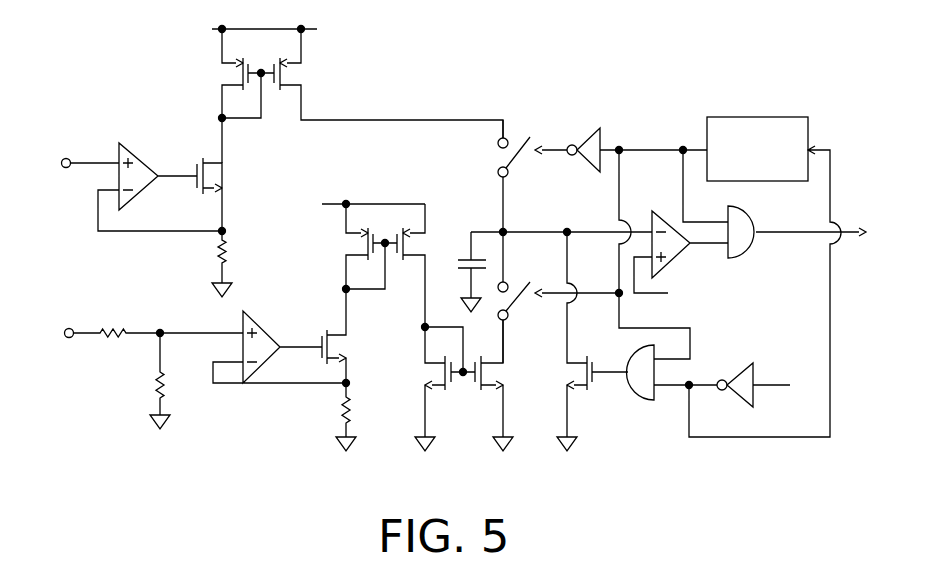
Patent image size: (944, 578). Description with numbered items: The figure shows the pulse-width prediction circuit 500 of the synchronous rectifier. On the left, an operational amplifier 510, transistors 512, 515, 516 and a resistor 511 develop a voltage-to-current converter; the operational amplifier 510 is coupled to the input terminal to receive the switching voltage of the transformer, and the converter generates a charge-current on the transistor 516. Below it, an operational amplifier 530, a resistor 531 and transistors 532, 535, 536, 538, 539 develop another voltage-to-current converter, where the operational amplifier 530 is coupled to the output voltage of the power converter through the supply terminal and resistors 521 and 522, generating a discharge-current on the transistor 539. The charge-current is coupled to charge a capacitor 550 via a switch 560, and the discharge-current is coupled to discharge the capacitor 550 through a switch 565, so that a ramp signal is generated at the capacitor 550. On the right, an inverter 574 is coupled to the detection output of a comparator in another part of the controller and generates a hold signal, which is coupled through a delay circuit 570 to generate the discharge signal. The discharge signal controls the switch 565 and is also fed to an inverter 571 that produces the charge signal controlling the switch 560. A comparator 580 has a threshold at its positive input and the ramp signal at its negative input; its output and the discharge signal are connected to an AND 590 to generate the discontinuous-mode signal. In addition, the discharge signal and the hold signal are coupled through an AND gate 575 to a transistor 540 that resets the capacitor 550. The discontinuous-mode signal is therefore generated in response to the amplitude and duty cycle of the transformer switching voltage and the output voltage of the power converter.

The pulse-width prediction circuit 500 is at (788, 68).
The operational amplifier 510 is at (140, 160).
The resistor 511 is at (241, 264).
The transistor 512 is at (232, 194).
The transistor 515 is at (222, 96).
The transistor 516 is at (382, 83).
The resistor 521 is at (134, 328).
The resistor 522 is at (150, 384).
The operational amplifier 530 is at (272, 337).
The resistor 531 is at (364, 417).
The transistor 532 is at (357, 336).
The transistor 535 is at (347, 248).
The transistor 536 is at (410, 265).
The transistor 538 is at (445, 389).
The transistor 539 is at (511, 385).
The transistor 540 is at (565, 373).
The capacitor 550 is at (462, 255).
The switch 560 is at (518, 140).
The switch 565 is at (525, 297).
The delay circuit 570 is at (793, 135).
The inverter 571 is at (587, 130).
The inverter 574 is at (740, 375).
The AND gate 575 is at (640, 386).
The comparator 580 is at (678, 252).
The AND 590 is at (745, 243).